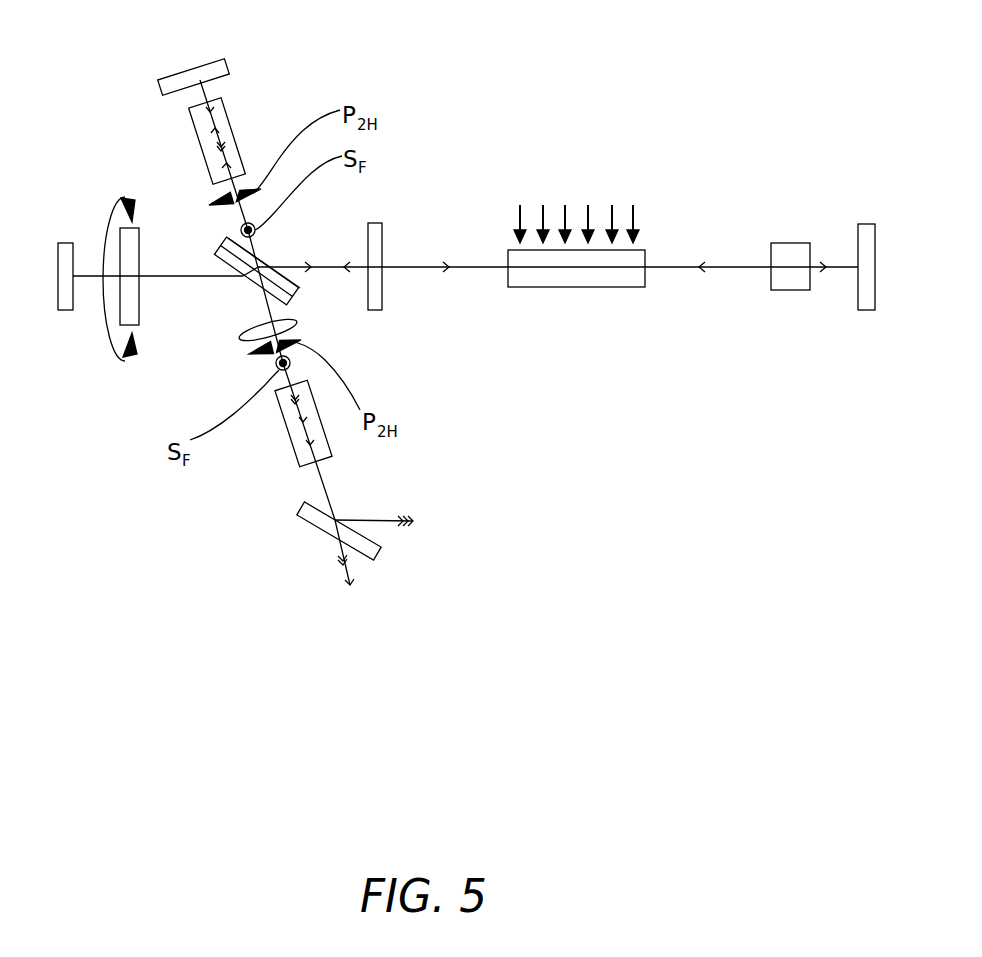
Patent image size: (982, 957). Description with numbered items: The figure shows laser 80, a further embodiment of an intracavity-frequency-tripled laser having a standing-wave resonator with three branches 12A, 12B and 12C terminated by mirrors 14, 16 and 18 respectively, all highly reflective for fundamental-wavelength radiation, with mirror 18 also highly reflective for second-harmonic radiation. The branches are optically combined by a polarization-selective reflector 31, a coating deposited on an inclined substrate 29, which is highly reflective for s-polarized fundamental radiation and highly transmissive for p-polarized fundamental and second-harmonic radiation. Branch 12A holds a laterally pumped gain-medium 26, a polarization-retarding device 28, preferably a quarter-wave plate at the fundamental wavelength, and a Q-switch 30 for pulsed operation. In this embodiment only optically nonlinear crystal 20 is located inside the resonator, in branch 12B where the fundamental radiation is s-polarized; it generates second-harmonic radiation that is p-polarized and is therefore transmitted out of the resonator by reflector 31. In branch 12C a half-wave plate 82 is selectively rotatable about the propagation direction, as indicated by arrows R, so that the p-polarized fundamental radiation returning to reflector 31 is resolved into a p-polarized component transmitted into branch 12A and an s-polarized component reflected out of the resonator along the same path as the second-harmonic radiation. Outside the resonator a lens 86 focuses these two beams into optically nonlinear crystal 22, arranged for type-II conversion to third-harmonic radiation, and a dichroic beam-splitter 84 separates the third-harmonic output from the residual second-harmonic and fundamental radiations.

The resonator branch 12A is at (761, 253).
The resonator branch 12B is at (299, 137).
The resonator branch 12C is at (197, 266).
The mirror 14 is at (855, 288).
The mirror 16 is at (224, 70).
The mirror 18 is at (73, 297).
The optically nonlinear crystal 20 is at (188, 118).
The optically nonlinear crystal 22 is at (293, 438).
The gain-medium 26 is at (578, 283).
The polarization-retarding device 28 is at (376, 242).
The substrate 29 is at (300, 292).
The Q-switch 30 is at (793, 243).
The polarization-selective reflector 31 is at (218, 250).
The laser 80 is at (583, 720).
The half-wave plate 82 is at (135, 305).
The dichroic beam-splitter 84 is at (320, 513).
The lens 86 is at (298, 322).